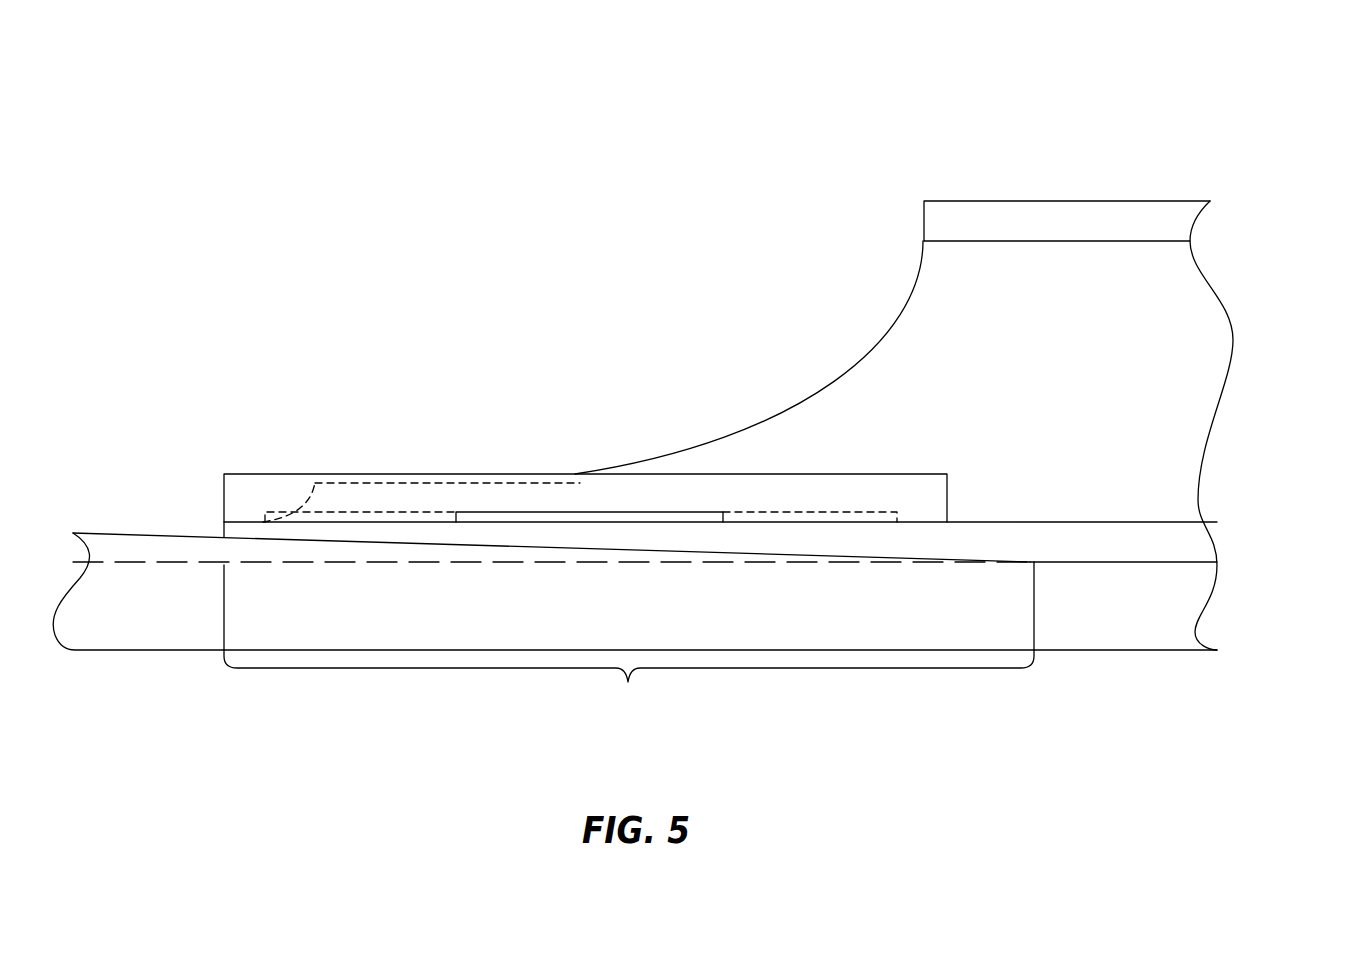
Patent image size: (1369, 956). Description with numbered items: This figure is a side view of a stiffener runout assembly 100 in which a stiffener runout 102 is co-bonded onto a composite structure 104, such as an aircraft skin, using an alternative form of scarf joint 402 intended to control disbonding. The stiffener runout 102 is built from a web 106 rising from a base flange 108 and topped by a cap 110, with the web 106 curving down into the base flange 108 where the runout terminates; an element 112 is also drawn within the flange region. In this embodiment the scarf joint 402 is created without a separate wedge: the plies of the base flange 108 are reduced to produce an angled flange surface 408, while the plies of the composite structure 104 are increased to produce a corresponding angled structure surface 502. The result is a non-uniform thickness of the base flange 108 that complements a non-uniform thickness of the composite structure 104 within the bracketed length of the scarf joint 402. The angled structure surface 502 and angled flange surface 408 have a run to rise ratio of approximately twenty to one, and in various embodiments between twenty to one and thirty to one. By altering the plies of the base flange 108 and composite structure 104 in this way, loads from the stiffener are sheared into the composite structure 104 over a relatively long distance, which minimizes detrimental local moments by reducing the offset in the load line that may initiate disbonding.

The stiffener runout assembly 100 is at (193, 132).
The stiffener runout 102 is at (1240, 446).
The composite structure 104 is at (1240, 598).
The web 106 is at (1205, 368).
The base flange 108 is at (1202, 545).
The cap 110 is at (1155, 217).
The component block 112 is at (918, 488).
The scarf joint 402 is at (629, 639).
The angled flange surface 408 is at (751, 564).
The angled structure surface 502 is at (614, 543).